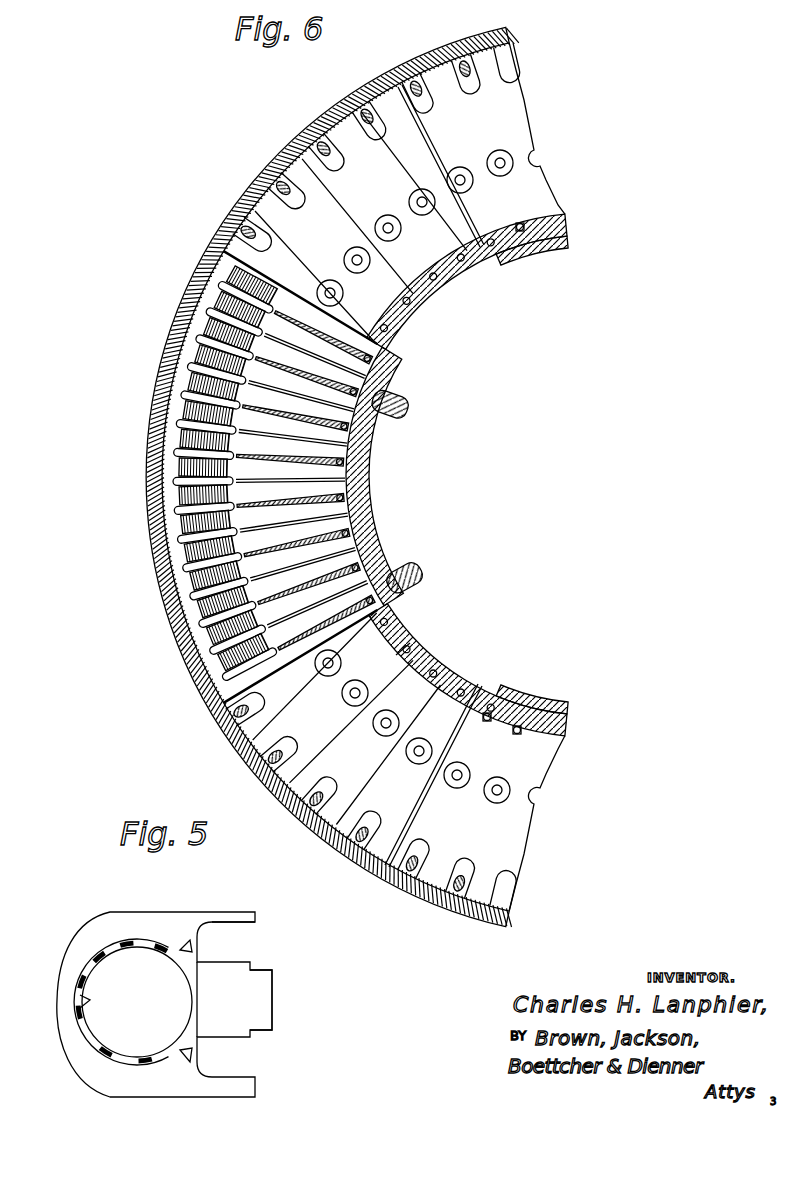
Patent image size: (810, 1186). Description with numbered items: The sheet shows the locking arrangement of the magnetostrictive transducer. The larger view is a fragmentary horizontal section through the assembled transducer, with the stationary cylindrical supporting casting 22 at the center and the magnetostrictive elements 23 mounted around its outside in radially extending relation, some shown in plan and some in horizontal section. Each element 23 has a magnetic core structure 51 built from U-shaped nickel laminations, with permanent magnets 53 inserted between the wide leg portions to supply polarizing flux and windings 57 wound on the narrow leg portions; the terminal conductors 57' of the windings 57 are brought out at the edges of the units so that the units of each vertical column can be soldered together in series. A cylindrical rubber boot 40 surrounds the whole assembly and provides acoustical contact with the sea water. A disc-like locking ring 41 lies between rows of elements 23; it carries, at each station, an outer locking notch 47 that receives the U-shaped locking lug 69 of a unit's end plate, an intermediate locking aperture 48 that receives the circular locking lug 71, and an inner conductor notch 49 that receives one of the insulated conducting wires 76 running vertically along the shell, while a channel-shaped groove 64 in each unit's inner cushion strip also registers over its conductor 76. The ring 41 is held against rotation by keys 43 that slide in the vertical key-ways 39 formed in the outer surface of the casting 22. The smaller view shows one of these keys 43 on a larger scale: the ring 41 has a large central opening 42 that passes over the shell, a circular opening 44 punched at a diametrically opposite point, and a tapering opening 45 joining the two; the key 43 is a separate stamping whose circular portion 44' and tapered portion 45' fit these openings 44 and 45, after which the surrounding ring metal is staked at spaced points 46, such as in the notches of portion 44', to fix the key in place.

In FIG. 6, the supporting casting 22 is at (440, 275).
In FIG. 6, the magnetostrictive elements 23 is at (330, 239).
In FIG. 6, the key-ways 39 is at (372, 466).
In FIG. 6, the rubber boot 40 is at (240, 214).
In FIG. 6, the locking rings 41 is at (500, 125).
In FIG. 5, the locking rings 41 is at (83, 943).
In FIG. 5, the central opening 42 is at (262, 915).
In FIG. 5, the keys 43 is at (272, 1006).
In FIG. 5, the circular openings 44 is at (56, 1007).
In FIG. 5, the circular portion 44' is at (133, 1002).
In FIG. 5, the tapering opening 45 is at (179, 984).
In FIG. 5, the tapered portion 45' is at (216, 999).
In FIG. 5, the staked points 46 is at (135, 940).
In FIG. 6, the outer locking notch 47 is at (463, 77).
In FIG. 6, the intermediate locking aperture 48 is at (500, 175).
In FIG. 6, the inner conductor notch 49 is at (522, 235).
In FIG. 6, the magnetic core structure 51 is at (176, 548).
In FIG. 6, the permanent magnets 53 is at (356, 530).
In FIG. 6, the windings 57 is at (236, 481).
In FIG. 6, the terminal conductors 57' is at (329, 476).
In FIG. 6, the channel-shaped groove 64 is at (405, 645).
In FIG. 6, the U-shaped locking lug 69 is at (327, 162).
In FIG. 6, the circular locking lug 71 is at (394, 238).
In FIG. 6, the insulated conducting wires 76 is at (392, 334).